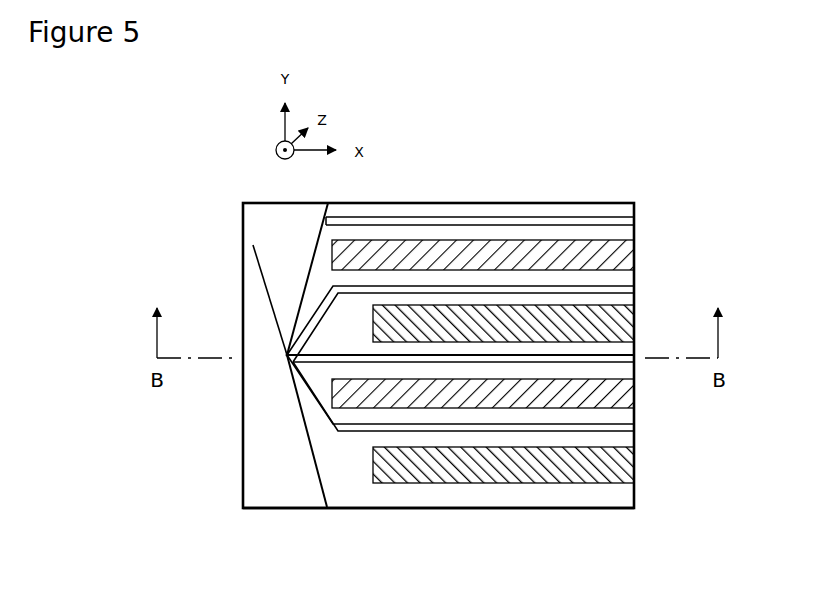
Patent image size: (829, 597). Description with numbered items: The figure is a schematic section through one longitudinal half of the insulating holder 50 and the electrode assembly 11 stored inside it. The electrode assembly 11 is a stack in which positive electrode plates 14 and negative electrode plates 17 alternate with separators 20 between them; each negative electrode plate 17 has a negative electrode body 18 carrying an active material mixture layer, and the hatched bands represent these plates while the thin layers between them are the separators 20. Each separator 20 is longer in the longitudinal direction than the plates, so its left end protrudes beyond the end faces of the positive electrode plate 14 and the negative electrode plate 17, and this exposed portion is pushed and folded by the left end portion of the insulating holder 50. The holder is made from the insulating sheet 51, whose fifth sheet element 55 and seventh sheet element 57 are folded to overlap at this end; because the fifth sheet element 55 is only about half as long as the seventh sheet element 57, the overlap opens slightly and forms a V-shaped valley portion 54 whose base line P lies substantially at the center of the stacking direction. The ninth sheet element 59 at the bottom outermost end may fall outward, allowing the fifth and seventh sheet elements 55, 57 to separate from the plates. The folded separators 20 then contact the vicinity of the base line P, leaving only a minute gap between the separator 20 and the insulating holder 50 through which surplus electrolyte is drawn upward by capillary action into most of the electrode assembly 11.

The electrode assembly 11 is at (588, 484).
The positive electrode plate 14 is at (637, 318).
The negative electrode plate 17 is at (637, 255).
The negative electrode body 18 is at (434, 214).
The separator 20 is at (512, 215).
The insulating holder 50 is at (448, 512).
The insulating sheet 51 is at (520, 512).
The valley portion 54 is at (309, 423).
The fifth sheet element 55 is at (297, 320).
The seventh sheet element 57 is at (307, 442).
The ninth sheet element 59 is at (253, 427).
The base line P is at (286, 356).